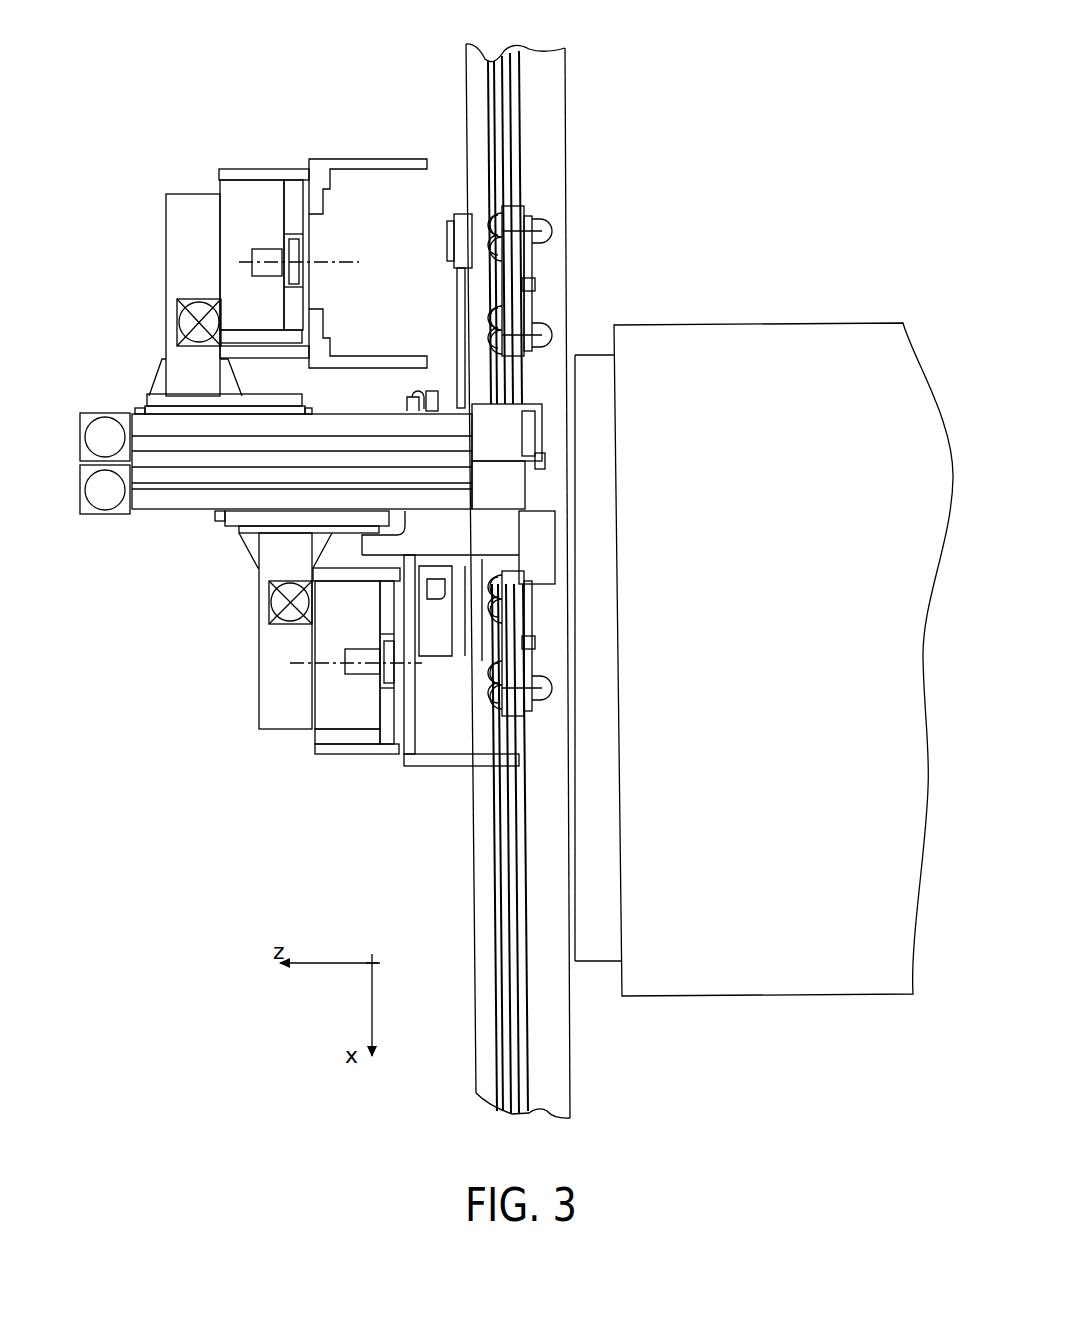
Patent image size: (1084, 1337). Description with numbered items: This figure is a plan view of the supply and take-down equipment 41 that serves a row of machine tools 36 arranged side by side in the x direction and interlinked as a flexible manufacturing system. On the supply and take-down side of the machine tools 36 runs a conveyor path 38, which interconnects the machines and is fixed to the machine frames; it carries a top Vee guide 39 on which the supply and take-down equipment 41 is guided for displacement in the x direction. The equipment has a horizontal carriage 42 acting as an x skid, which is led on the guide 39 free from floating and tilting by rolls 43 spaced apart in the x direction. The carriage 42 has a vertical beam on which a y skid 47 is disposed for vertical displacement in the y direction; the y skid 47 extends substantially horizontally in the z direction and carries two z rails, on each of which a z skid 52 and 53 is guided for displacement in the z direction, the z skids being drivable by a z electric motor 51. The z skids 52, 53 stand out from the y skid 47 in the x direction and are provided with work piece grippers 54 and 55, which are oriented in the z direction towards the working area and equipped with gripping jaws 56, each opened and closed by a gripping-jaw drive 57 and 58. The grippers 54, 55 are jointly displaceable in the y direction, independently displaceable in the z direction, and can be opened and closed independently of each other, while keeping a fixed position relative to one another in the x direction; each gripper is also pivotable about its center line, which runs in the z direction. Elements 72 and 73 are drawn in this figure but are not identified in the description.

The machine tool 36 is at (745, 648).
The conveyor path 38 is at (567, 102).
The top Vee guide 39 is at (490, 97).
The supply and take-down equipment 41 is at (365, 770).
The horizontal carriage 42 is at (537, 386).
The rolls 43 is at (545, 237).
The y skid 47 is at (207, 525).
The z electric motor 51 is at (103, 432).
The z skid 52 is at (245, 565).
The z skid 53 is at (158, 362).
The work piece gripper 54 is at (440, 770).
The work piece gripper 55 is at (355, 155).
The gripping jaws 56 is at (415, 172).
The gripping-jaw drive 57 is at (357, 666).
The gripping-jaw drive 58 is at (266, 252).
The bearing 72 is at (193, 306).
The axis 73 is at (335, 261).